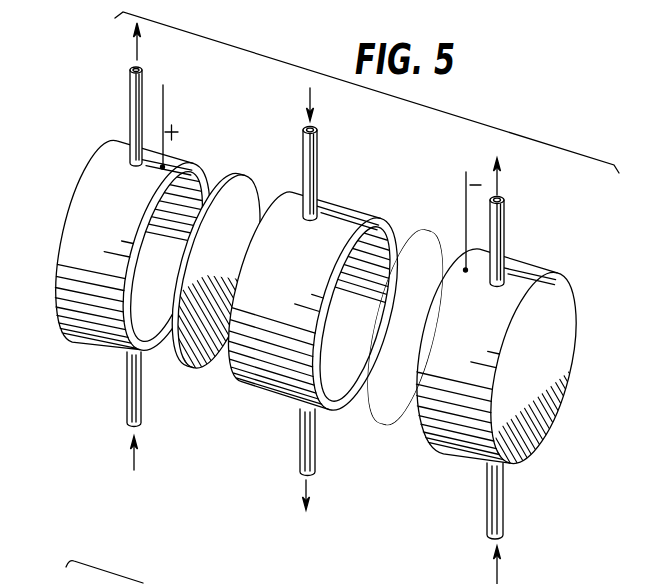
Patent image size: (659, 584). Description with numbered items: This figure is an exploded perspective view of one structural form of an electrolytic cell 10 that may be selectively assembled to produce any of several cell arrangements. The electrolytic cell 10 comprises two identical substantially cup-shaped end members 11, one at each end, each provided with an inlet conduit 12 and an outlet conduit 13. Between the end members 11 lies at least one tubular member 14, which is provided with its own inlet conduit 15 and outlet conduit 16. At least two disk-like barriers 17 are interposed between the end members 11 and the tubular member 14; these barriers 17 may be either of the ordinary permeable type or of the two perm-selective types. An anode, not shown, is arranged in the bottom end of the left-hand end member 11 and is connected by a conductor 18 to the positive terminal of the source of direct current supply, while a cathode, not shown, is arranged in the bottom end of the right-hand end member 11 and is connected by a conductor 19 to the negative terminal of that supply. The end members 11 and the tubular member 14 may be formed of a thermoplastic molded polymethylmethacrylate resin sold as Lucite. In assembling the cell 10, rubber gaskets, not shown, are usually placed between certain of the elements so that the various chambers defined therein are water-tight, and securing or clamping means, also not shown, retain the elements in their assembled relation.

The electrolytic cell 10 is at (62, 188).
The cup-shaped end member 11 is at (73, 228).
The inlet conduit 12 is at (127, 405).
The outlet conduit 13 is at (133, 98).
The tubular member 14 is at (280, 385).
The inlet conduit 15 is at (307, 172).
The outlet conduit 16 is at (302, 442).
The disk-like barrier 17 is at (243, 182).
The conductor 18 is at (165, 107).
The conductor 19 is at (466, 199).